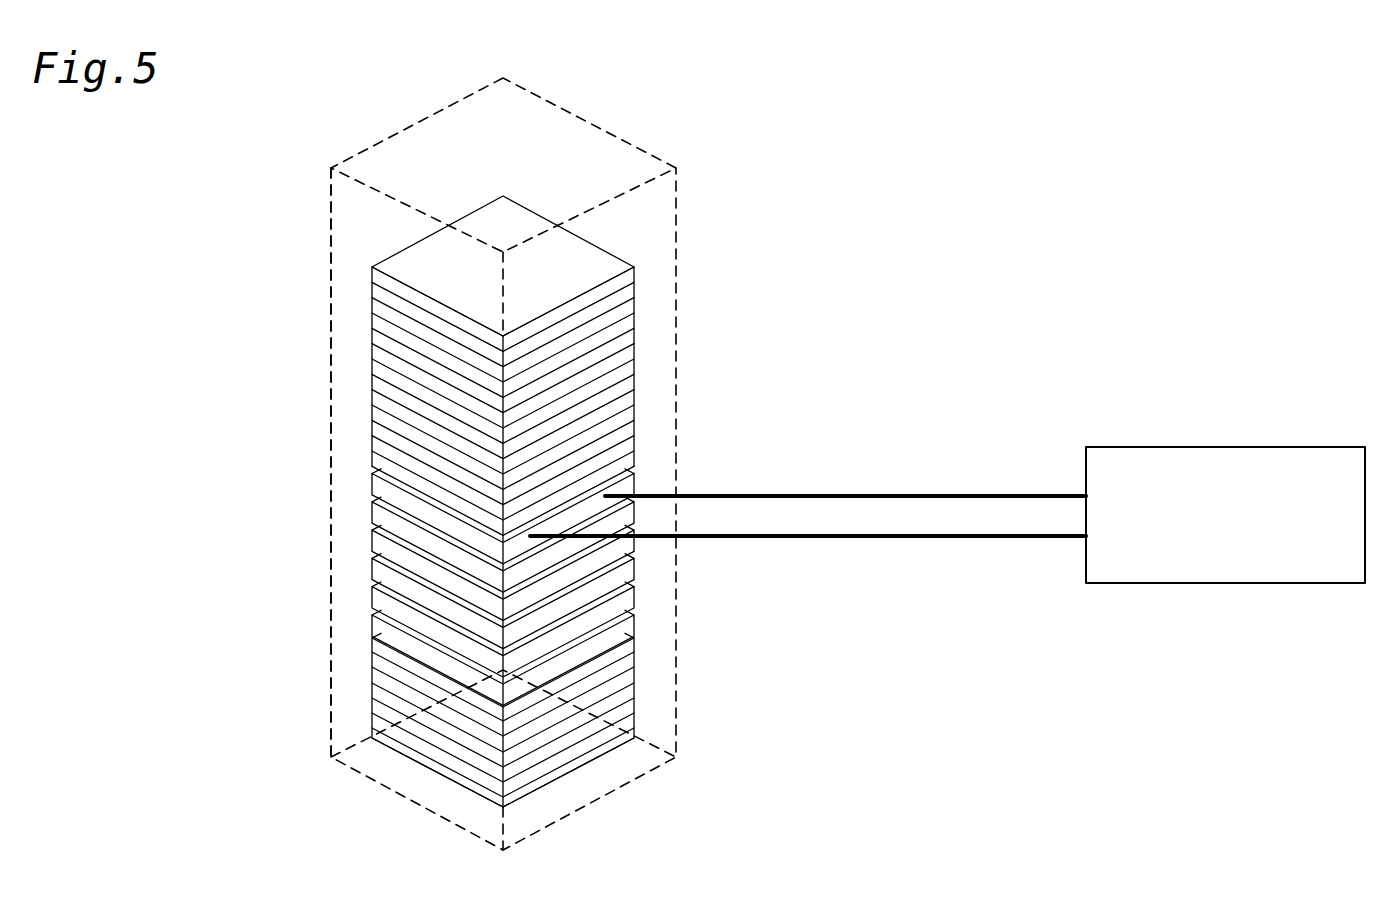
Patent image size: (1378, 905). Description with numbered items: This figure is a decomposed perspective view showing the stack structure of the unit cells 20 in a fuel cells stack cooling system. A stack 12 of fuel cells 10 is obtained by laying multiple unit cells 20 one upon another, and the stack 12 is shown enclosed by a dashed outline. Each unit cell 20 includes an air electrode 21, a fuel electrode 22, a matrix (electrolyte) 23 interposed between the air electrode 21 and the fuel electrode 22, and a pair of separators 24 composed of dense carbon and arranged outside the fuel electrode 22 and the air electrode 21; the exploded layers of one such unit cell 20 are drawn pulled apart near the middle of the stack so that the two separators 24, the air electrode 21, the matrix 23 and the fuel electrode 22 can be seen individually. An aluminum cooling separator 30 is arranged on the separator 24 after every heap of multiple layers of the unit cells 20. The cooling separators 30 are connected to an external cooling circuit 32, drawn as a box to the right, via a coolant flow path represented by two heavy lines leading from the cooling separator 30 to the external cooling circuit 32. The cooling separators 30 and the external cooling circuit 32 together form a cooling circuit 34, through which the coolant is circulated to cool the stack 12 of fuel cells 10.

The fuel cells 10 is at (676, 217).
The stack 12 is at (352, 552).
The unit cell 20 is at (594, 604).
The air electrode 21 is at (624, 545).
The fuel electrode 22 is at (624, 601).
The matrix (electrolyte) 23 is at (624, 573).
The separator 24 is at (624, 517).
The cooling separator 30 is at (626, 480).
The external cooling circuit 32 is at (1223, 447).
The cooling circuit 34 is at (950, 377).